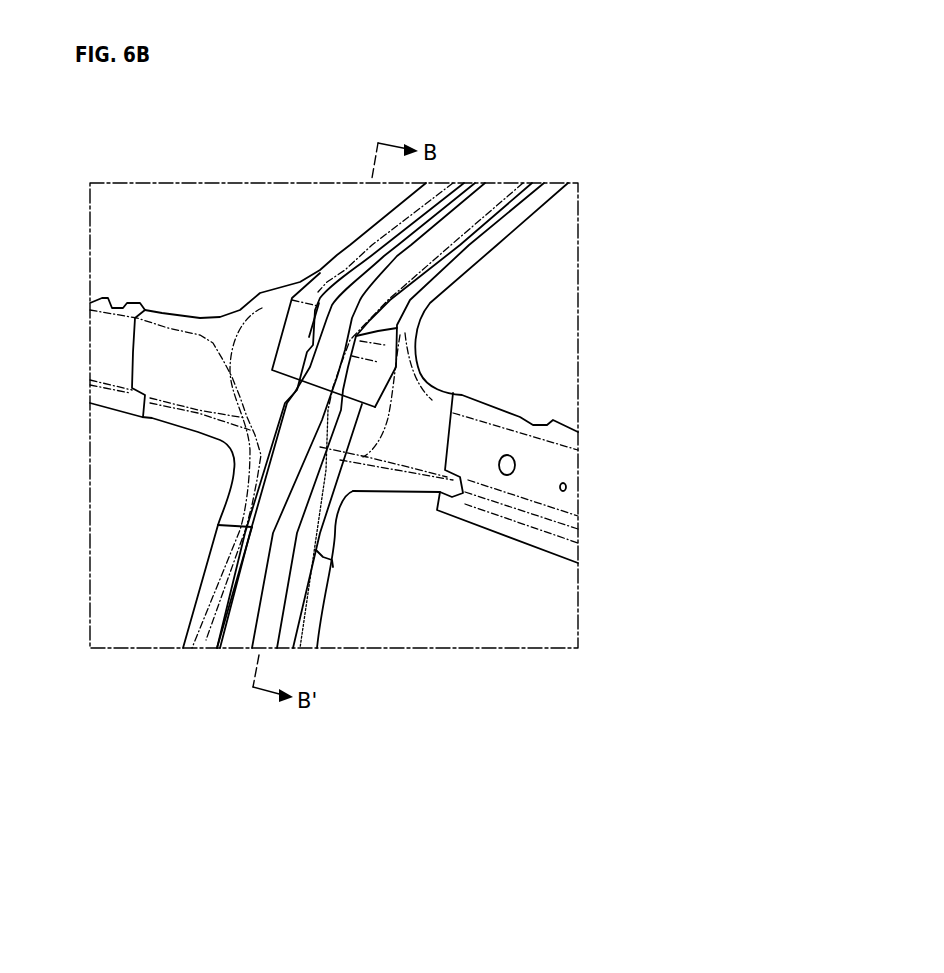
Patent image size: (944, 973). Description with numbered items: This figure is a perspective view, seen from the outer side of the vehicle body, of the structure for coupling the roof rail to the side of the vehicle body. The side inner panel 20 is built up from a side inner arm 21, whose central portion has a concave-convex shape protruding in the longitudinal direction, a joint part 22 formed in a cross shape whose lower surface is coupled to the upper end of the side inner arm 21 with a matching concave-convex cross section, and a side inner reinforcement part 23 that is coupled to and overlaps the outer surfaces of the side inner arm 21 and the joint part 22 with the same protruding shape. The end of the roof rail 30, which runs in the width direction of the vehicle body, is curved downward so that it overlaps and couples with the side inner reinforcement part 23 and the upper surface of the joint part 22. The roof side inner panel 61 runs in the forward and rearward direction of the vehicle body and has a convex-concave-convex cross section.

The side inner panel 20 is at (330, 520).
The side inner arm 21 is at (205, 623).
The joint part 22 is at (410, 490).
The side inner reinforcement part 23 is at (243, 620).
The roof rail 30 is at (474, 208).
The roof side inner panel 61 is at (540, 467).